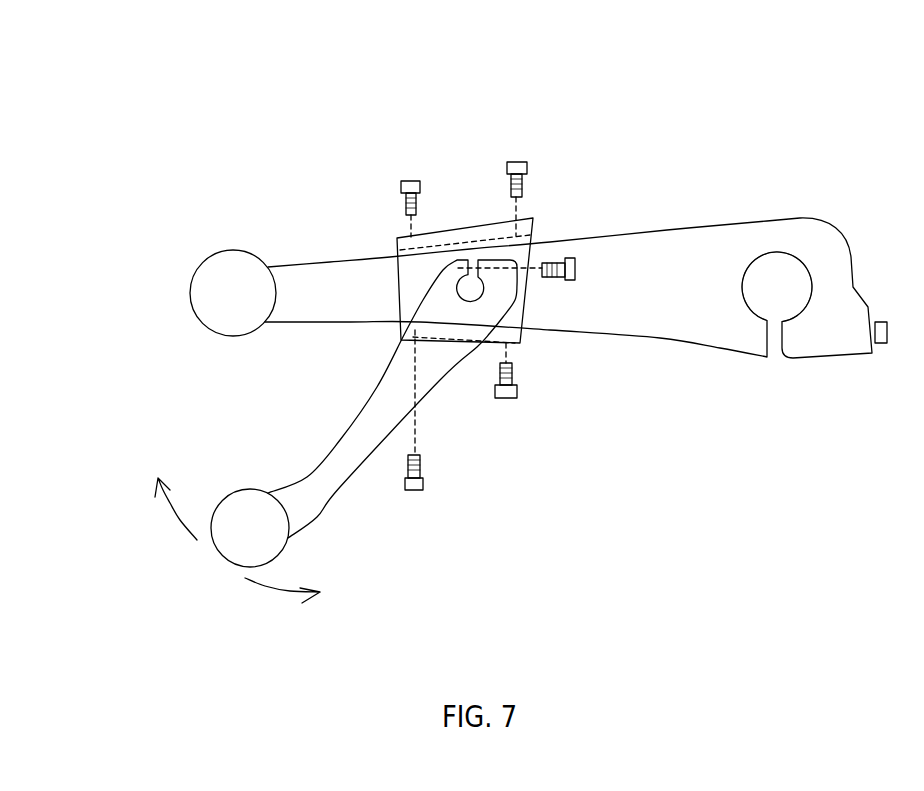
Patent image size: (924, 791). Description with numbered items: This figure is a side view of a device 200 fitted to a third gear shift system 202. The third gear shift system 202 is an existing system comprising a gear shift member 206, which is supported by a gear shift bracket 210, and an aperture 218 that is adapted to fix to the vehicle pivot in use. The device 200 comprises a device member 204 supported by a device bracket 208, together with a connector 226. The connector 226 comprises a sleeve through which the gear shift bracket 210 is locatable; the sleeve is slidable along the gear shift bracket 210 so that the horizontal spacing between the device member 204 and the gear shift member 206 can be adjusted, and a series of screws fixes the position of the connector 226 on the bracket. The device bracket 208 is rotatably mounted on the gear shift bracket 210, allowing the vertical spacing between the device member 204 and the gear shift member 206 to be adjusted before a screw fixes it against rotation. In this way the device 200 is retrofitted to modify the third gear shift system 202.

The device 200 is at (449, 482).
The third gear shift system 202 is at (707, 392).
The device member 204 is at (210, 573).
The gear shift member 206 is at (203, 247).
The device bracket 208 is at (458, 382).
The gear shift bracket 210 is at (560, 232).
The aperture 218 is at (803, 269).
The connector 226 is at (401, 234).